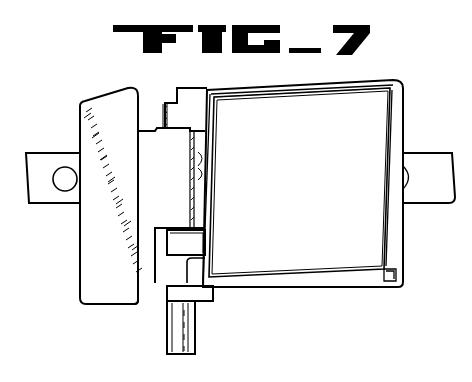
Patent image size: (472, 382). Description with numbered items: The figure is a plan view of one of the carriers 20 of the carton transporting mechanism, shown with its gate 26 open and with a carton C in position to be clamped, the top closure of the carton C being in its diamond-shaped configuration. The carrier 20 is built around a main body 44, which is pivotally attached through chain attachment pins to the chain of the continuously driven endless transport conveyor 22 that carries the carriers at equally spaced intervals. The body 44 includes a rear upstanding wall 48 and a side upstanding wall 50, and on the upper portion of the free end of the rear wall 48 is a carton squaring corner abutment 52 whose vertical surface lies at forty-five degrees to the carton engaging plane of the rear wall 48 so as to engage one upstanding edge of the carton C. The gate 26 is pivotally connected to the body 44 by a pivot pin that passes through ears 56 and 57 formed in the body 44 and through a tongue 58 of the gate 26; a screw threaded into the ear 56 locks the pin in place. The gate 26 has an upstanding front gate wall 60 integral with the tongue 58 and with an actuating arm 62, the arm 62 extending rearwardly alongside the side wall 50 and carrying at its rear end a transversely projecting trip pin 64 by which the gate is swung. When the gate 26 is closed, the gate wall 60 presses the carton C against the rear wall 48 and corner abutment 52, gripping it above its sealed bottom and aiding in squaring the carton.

The carrier 20 is at (408, 104).
The transport conveyor 22 is at (416, 149).
The gate 26 is at (94, 284).
The main body 44 is at (396, 256).
The rear upstanding wall 48 is at (403, 222).
The side upstanding wall 50 is at (336, 290).
The carton squaring corner abutment 52 is at (392, 80).
The ear 56 is at (192, 97).
The ear 57 is at (178, 239).
The tongue 58 is at (183, 186).
The gate wall 60 is at (80, 243).
The actuating arm 62 is at (205, 290).
The trip pin 64 is at (185, 347).
The carton C is at (241, 97).